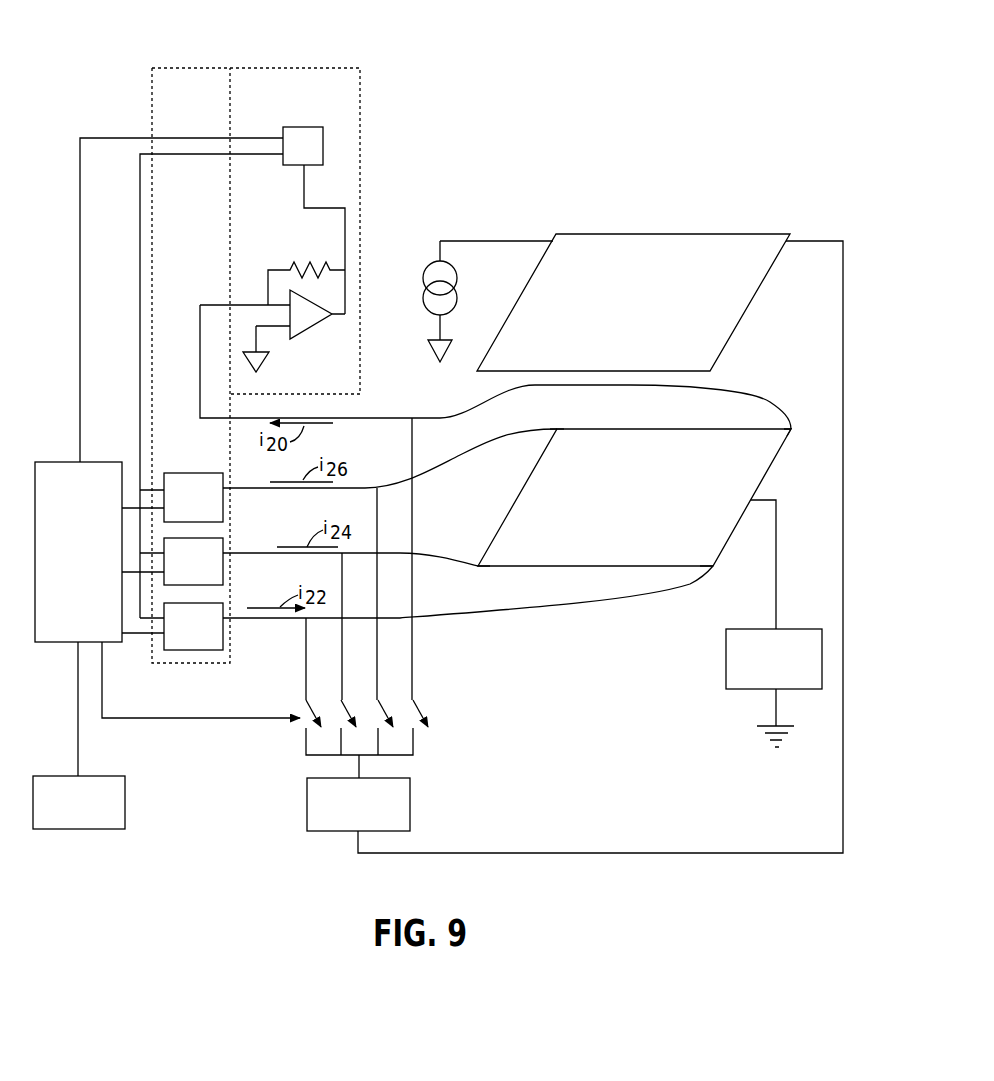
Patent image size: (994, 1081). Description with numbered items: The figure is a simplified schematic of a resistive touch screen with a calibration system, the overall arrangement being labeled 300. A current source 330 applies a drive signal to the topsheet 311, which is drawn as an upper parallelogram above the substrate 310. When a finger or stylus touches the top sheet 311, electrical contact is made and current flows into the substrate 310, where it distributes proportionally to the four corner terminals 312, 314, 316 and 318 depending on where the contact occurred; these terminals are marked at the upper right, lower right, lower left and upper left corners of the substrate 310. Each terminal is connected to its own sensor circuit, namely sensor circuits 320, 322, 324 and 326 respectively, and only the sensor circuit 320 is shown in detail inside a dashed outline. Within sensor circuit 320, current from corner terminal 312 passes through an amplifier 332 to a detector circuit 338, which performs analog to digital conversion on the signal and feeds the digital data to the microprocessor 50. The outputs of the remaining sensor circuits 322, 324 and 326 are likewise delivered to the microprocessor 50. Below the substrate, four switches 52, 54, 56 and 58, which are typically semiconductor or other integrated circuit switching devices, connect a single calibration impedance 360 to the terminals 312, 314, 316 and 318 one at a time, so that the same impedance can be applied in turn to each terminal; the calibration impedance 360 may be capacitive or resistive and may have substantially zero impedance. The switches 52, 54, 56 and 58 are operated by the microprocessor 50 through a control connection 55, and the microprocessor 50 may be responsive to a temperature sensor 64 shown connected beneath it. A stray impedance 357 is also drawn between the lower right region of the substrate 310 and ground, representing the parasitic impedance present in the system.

The touch screen system 300 is at (96, 88).
The sensor circuit 320 is at (253, 365).
The detector circuit 338 is at (328, 150).
The amplifier 332 is at (322, 329).
The current source 330 is at (416, 277).
The topsheet 311 is at (596, 232).
The substrate 310 is at (620, 553).
The corner terminal 312 is at (796, 431).
The corner terminal 314 is at (718, 566).
The corner terminal 316 is at (487, 571).
The corner terminal 318 is at (560, 425).
The microprocessor 50 is at (65, 490).
The sensor circuit 326 is at (226, 508).
The sensor circuit 324 is at (226, 572).
The sensor circuit 322 is at (226, 633).
The temperature sensor 64 is at (128, 800).
The control connection 55 is at (248, 720).
The switch 54 is at (300, 707).
The switch 56 is at (349, 707).
The switch 58 is at (386, 709).
The switch 52 is at (433, 714).
The calibration impedance 360 is at (414, 802).
The stray impedance 357 is at (724, 662).